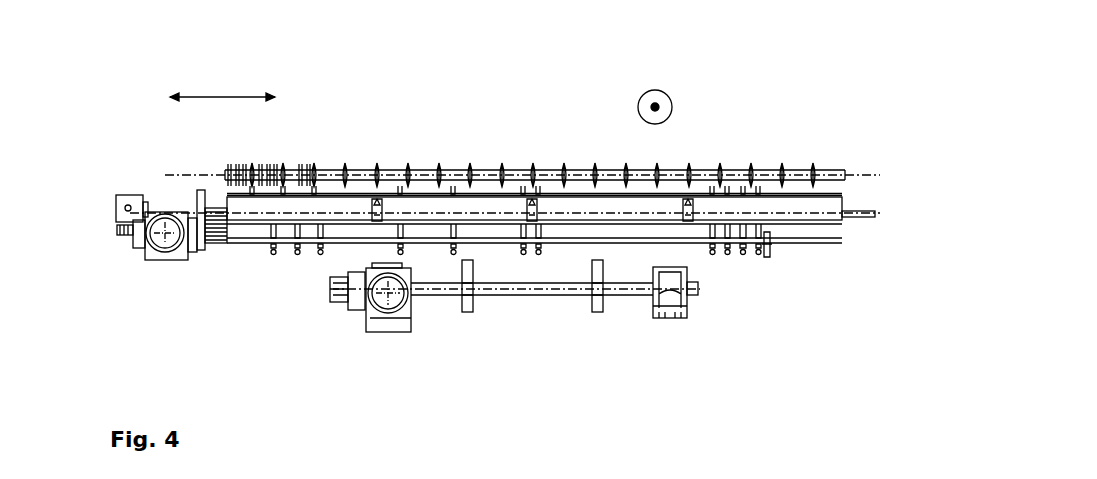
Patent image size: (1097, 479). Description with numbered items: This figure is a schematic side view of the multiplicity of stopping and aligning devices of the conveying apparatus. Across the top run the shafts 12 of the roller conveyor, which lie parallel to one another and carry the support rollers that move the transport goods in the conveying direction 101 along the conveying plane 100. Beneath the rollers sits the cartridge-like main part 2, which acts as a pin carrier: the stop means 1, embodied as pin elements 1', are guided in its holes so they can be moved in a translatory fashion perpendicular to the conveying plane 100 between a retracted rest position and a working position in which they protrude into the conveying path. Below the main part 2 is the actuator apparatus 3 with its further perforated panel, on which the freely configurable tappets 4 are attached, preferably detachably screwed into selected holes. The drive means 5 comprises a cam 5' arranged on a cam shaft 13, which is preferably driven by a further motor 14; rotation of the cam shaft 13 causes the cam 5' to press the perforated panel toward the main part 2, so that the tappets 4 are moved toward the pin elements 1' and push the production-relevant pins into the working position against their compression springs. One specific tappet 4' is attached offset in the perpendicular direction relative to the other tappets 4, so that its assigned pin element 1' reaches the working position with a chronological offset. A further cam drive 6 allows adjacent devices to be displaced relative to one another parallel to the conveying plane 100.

The conveying plane 100 is at (202, 96).
The conveying direction 101 is at (660, 90).
The stop means 1 is at (203, 279).
The pin elements 1' is at (212, 220).
The main part 2 is at (842, 218).
The actuator apparatus 3 is at (842, 242).
The tappets 4 is at (752, 179).
The specific tappet 4' is at (796, 274).
The drive means 5 is at (695, 322).
The cam 5' is at (537, 311).
The further cam drive 6 is at (692, 212).
The shafts 12 is at (837, 177).
The cam shaft 13 is at (495, 290).
The further motor 14 is at (390, 295).